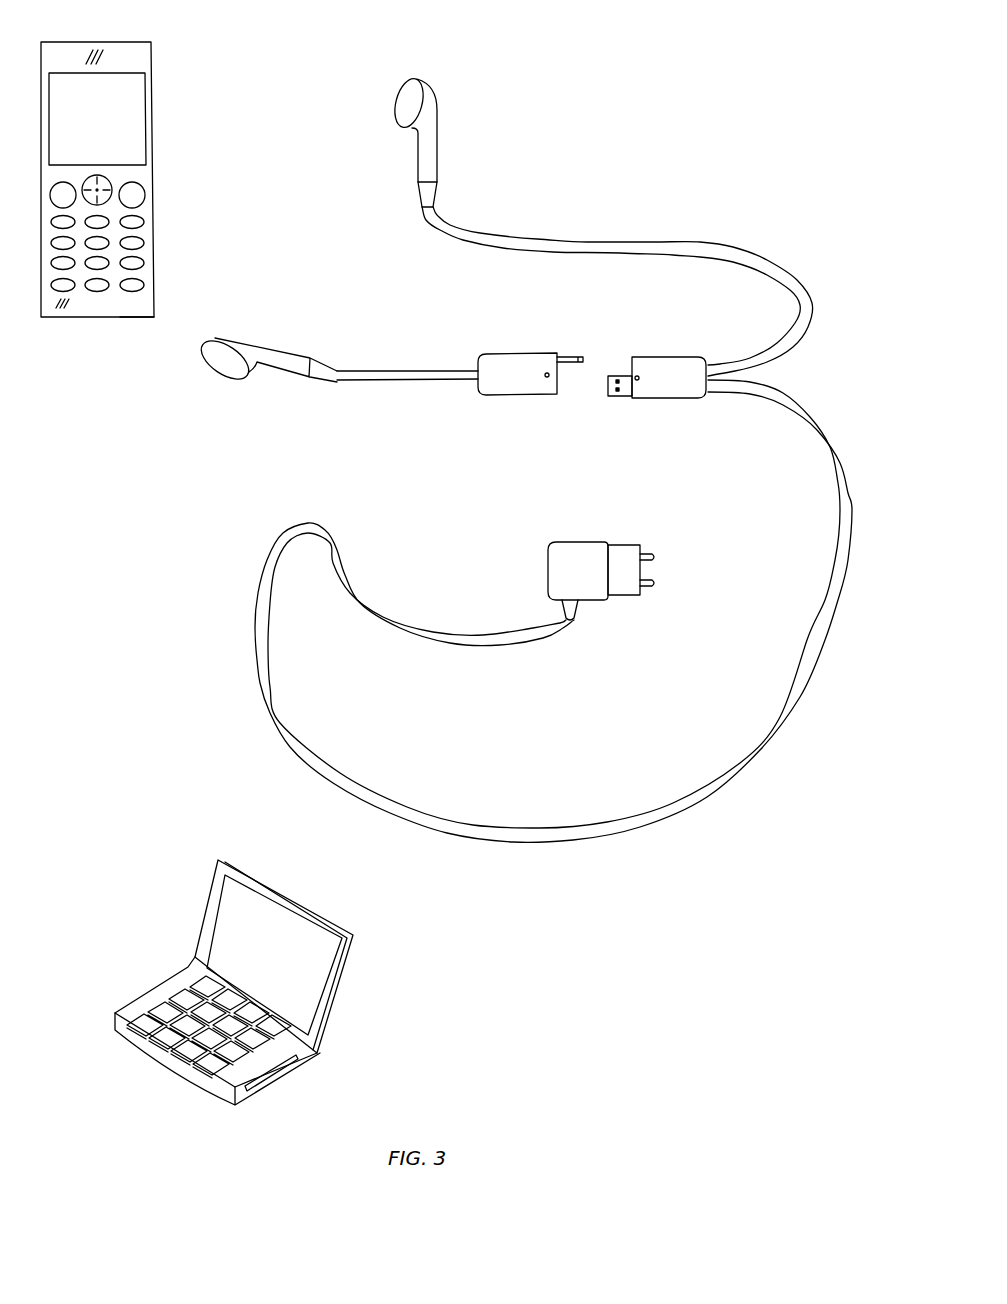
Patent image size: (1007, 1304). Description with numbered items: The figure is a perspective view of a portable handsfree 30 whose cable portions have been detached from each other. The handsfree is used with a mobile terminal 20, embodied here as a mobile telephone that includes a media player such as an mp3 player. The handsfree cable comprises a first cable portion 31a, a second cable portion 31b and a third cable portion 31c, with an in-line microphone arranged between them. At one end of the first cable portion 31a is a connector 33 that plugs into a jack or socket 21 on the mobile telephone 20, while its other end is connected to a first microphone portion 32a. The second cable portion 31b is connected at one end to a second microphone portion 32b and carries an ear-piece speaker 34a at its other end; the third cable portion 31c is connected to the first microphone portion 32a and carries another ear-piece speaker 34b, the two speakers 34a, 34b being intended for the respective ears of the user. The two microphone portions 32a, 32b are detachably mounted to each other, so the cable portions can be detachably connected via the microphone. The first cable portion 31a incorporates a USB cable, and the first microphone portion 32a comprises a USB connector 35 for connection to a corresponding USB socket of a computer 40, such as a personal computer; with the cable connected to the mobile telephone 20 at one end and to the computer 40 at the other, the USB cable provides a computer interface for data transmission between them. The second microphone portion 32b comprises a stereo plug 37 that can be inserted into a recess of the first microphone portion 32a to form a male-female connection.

The mobile terminal 20 is at (145, 78).
The jack or socket 21 is at (137, 322).
The portable handsfree 30 is at (558, 207).
The first cable portion 31a is at (552, 830).
The second cable portion 31b is at (427, 370).
The third cable portion 31c is at (668, 255).
The first microphone portion 32a is at (670, 400).
The second microphone portion 32b is at (519, 395).
The connector 33 is at (607, 600).
The speaker 34a is at (232, 343).
The speaker 34b is at (427, 112).
The USB connector 35 is at (624, 403).
The plug 37 is at (577, 337).
The computer 40 is at (353, 1000).